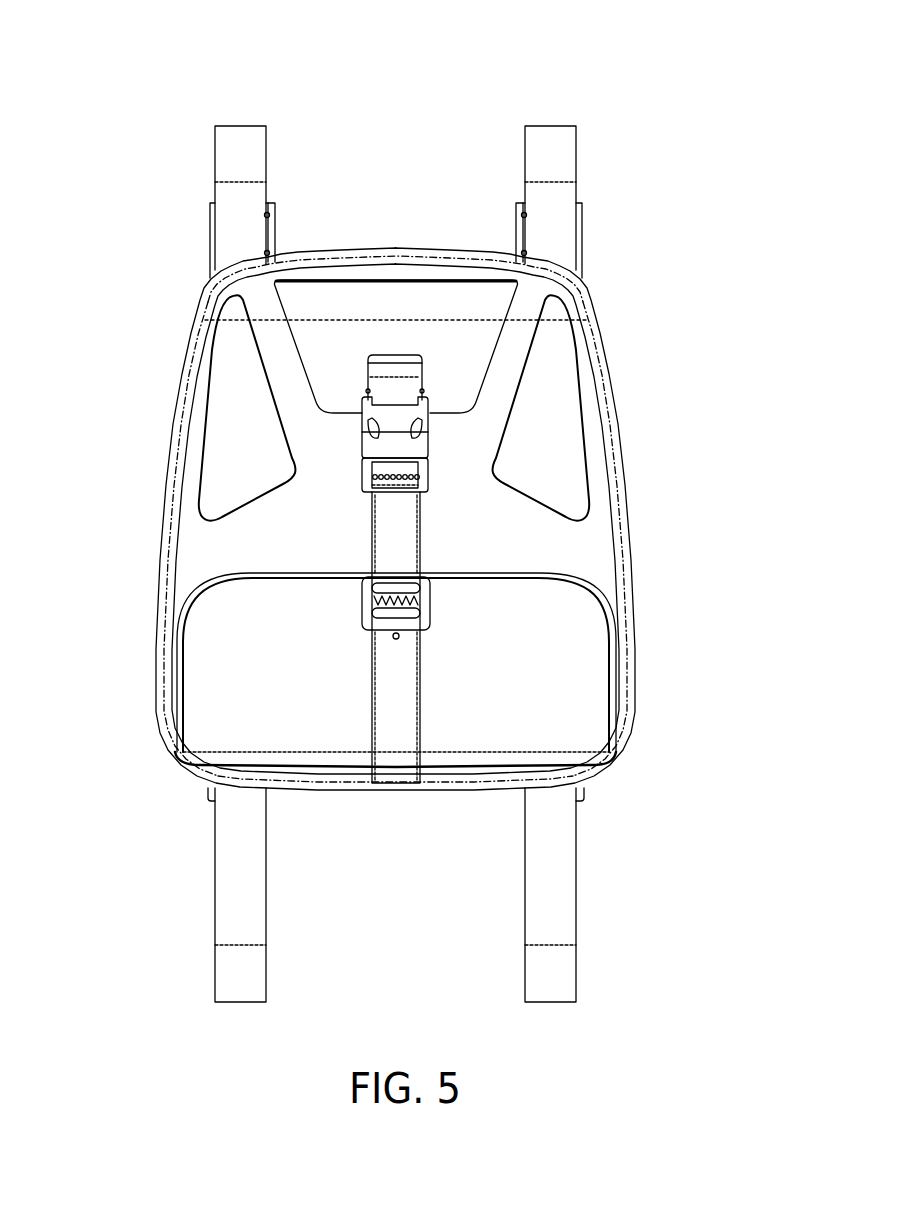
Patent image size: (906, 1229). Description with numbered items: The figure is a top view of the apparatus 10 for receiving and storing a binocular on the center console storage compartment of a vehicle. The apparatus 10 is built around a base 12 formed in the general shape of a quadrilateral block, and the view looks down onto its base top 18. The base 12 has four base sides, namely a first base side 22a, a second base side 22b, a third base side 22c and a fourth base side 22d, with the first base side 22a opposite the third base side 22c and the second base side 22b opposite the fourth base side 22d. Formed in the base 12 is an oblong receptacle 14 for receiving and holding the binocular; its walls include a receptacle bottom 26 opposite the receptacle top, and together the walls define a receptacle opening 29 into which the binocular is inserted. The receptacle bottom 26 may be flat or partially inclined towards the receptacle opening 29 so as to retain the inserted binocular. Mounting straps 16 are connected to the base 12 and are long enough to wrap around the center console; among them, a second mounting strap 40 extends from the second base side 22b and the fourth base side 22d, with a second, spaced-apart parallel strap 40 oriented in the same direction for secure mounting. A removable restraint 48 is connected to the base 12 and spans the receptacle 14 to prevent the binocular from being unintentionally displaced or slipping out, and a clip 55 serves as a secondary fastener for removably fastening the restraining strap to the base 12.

The apparatus 10 is at (164, 56).
The base 12 is at (508, 382).
The receptacle 14 is at (240, 638).
The mounting straps 16 is at (552, 208).
The base top 18 is at (467, 459).
The first base side 22a is at (640, 611).
The second base side 22b is at (411, 790).
The third base side 22c is at (152, 575).
The fourth base side 22d is at (370, 248).
The receptacle bottom 26 is at (563, 668).
The receptacle opening 29 is at (310, 678).
The second mounting strap 40 is at (240, 908).
The removable restraint 48 is at (407, 512).
The clip 55 is at (375, 426).